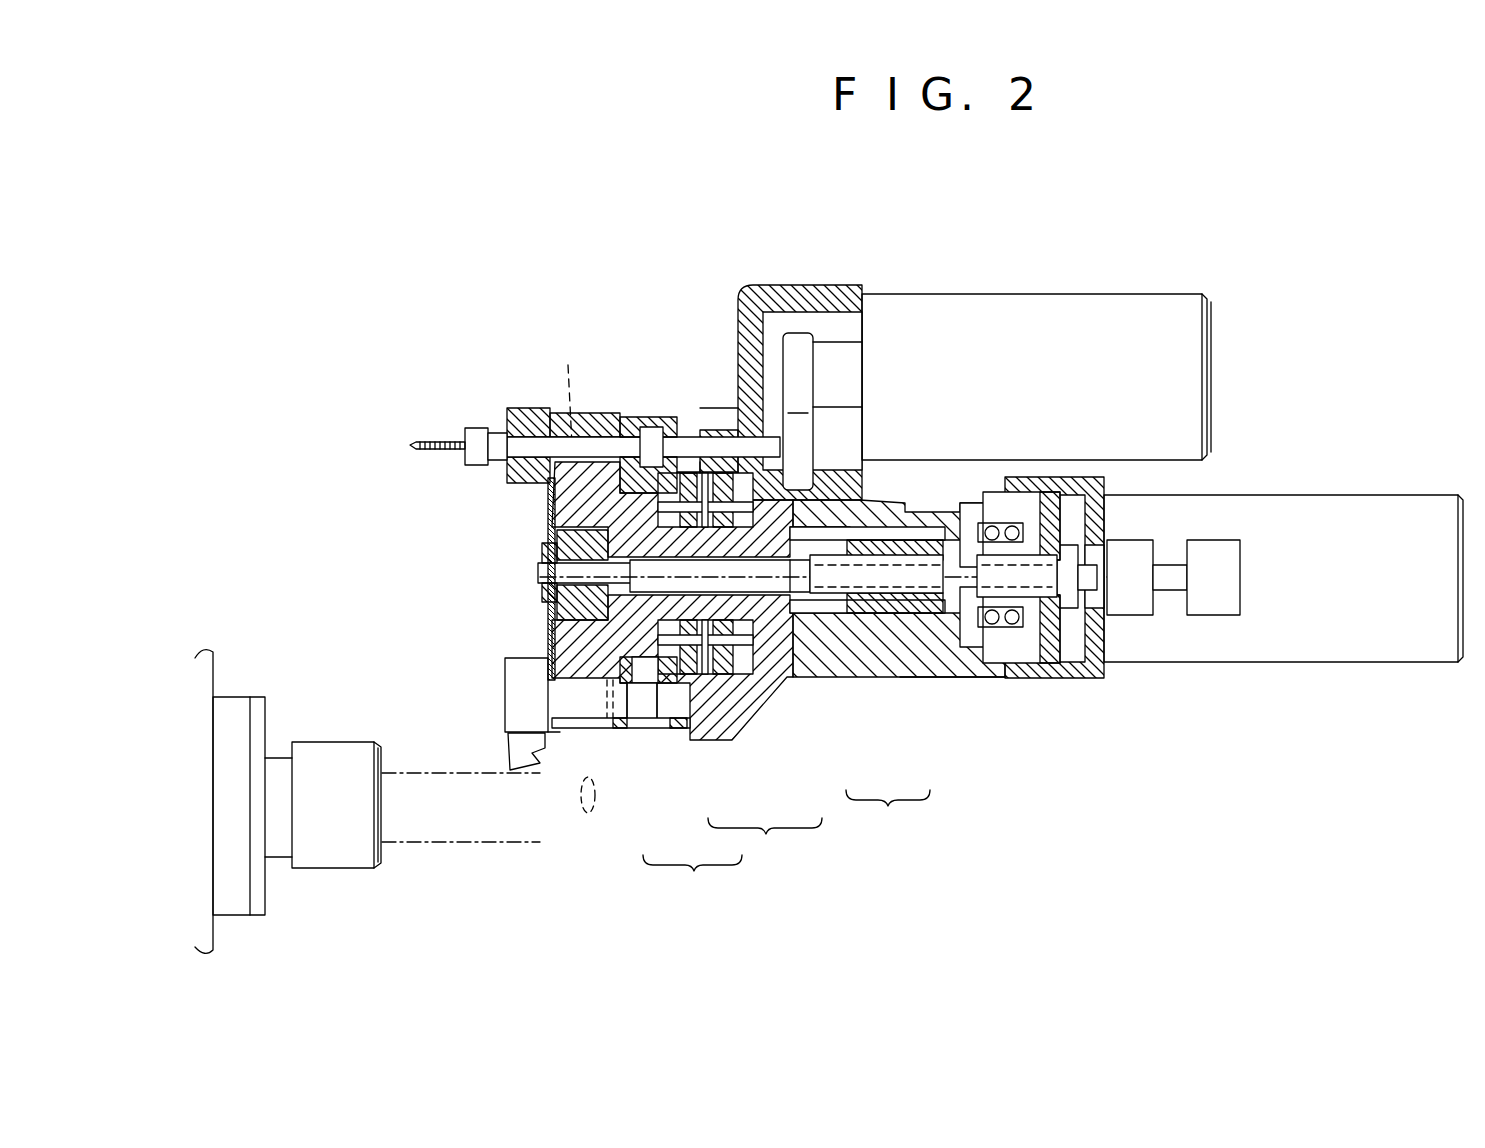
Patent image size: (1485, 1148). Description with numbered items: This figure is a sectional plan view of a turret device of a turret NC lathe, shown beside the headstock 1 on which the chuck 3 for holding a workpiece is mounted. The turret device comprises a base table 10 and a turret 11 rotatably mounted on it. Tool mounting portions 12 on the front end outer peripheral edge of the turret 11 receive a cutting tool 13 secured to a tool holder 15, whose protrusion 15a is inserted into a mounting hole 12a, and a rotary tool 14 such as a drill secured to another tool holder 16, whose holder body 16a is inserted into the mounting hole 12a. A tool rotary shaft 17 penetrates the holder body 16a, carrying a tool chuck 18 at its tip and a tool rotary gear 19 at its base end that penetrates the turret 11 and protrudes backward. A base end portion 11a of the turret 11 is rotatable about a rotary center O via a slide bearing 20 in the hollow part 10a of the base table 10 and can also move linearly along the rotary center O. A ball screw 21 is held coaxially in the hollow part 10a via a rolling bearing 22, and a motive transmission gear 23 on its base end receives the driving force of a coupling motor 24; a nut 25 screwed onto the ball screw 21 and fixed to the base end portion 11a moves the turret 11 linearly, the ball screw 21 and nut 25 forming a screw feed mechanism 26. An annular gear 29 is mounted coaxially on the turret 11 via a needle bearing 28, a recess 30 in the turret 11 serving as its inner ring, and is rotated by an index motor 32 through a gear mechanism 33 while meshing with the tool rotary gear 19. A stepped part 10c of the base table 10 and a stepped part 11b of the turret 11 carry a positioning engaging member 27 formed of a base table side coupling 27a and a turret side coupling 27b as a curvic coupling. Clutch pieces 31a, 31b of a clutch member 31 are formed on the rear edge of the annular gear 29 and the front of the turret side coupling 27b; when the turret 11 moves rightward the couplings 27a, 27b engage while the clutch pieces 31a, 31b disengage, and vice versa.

The headstock 1 is at (213, 672).
The chuck 3 is at (337, 870).
The base table 10 is at (927, 680).
The hollow part 10a is at (970, 615).
The stepped part 10c is at (727, 493).
The turret 11 is at (565, 738).
The base end portion 11a is at (787, 613).
The stepped part 11b is at (700, 470).
The tool mounting portion 12 is at (546, 481).
The mounting hole 12a is at (607, 888).
The cutting tool 13 is at (510, 758).
The rotary tool 14 is at (430, 440).
The tool holder 15 is at (504, 697).
The protrusion 15a is at (562, 735).
The tool holder 16 is at (519, 404).
The holder body 16a is at (538, 406).
The tool rotary shaft 17 is at (598, 446).
The tool chuck 18 is at (472, 466).
The tool rotary gear 19 is at (636, 430).
The slide bearing 20 is at (830, 598).
The ball screw 21 is at (865, 612).
The rolling bearing 22 is at (1003, 630).
The motive transmission gear 23 is at (1045, 655).
The coupling motor 24 is at (1226, 664).
The nut 25 is at (897, 612).
The screw feed mechanism 26 is at (904, 838).
The positioning engaging member 27 is at (765, 839).
The base table side coupling 27a is at (740, 677).
The turret side coupling 27b is at (700, 680).
The needle bearing 28 is at (640, 690).
The annular gear 29 is at (648, 690).
The recess 30 is at (612, 690).
The clutch member 31 is at (684, 794).
The clutch piece 31a is at (682, 737).
The clutch piece 31b is at (660, 737).
The index motor 32 is at (1046, 294).
The gear mechanism 33 is at (767, 373).
The rotary center O is at (538, 577).